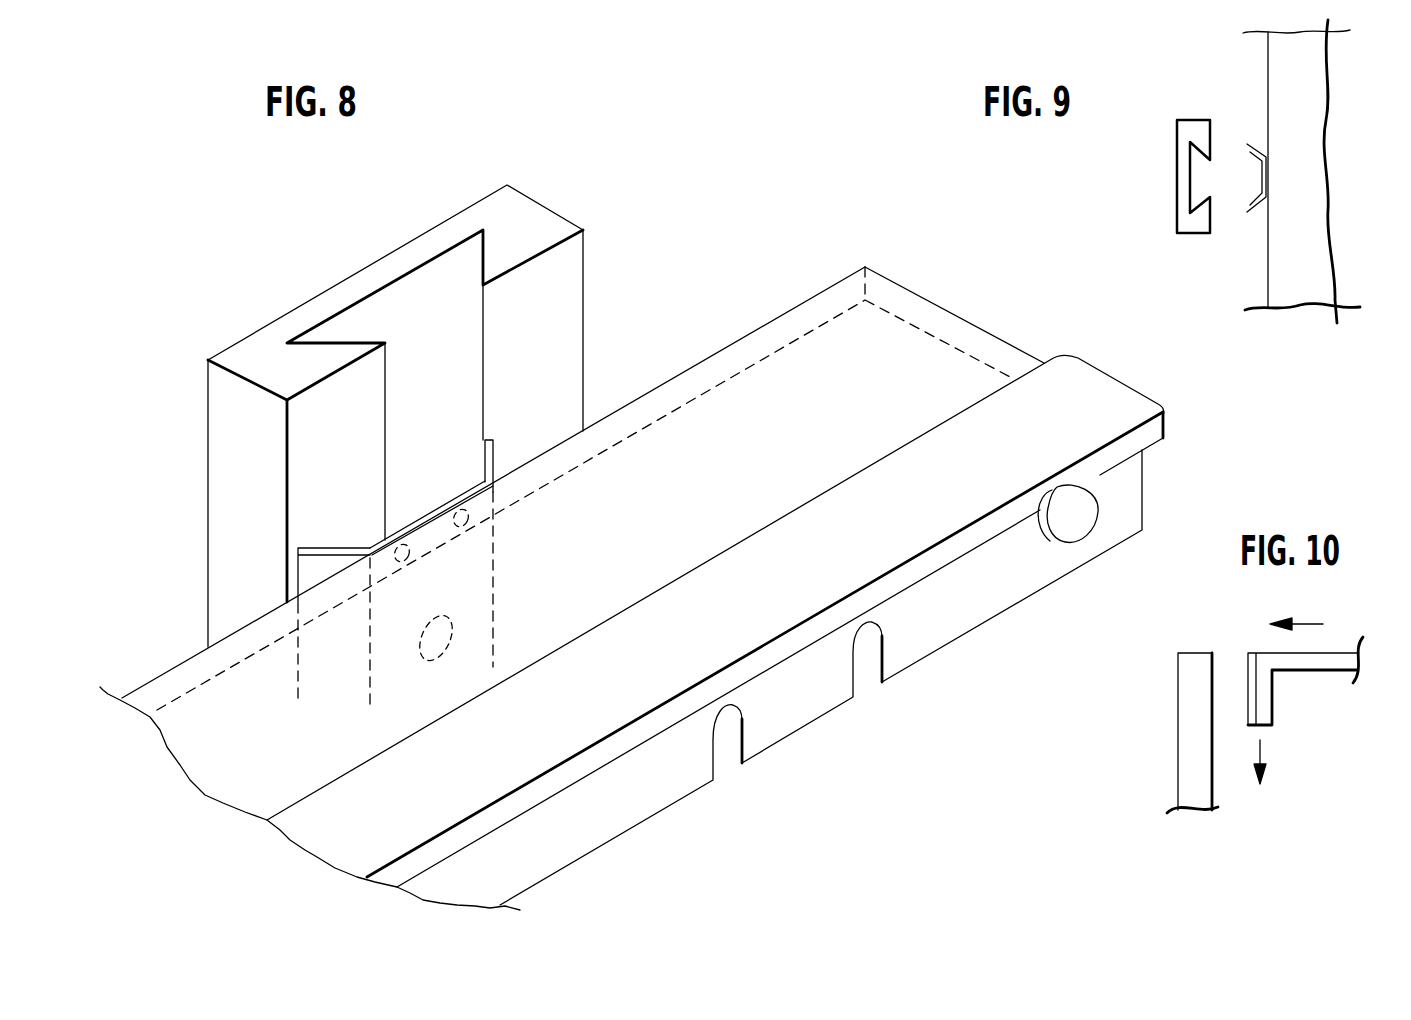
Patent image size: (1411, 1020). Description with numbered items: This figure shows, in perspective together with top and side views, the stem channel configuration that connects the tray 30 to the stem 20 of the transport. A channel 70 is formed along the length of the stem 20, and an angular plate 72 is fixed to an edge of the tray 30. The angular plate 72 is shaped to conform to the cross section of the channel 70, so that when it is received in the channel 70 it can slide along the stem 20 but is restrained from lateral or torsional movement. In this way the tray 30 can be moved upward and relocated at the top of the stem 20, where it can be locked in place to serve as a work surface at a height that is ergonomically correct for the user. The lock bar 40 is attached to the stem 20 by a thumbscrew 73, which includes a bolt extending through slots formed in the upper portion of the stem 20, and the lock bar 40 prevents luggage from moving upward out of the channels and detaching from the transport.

In FIG. 8, the stem 20 is at (240, 362).
In FIG. 9, the stem 20 is at (1178, 163).
In FIG. 10, the stem 20 is at (1195, 760).
In FIG. 8, the tray 30 is at (963, 345).
In FIG. 9, the tray 30 is at (1282, 62).
In FIG. 10, the tray 30 is at (1330, 660).
In FIG. 8, the lock bar 40 is at (819, 581).
In FIG. 8, the channel 70 is at (377, 305).
In FIG. 9, the channel 70 is at (1197, 160).
In FIG. 8, the angular plate 72 is at (488, 438).
In FIG. 9, the angular plate 72 is at (1250, 213).
In FIG. 8, the thumbscrew 73 is at (1075, 520).